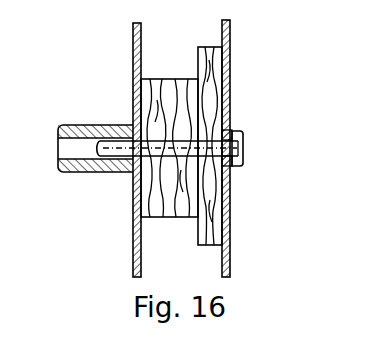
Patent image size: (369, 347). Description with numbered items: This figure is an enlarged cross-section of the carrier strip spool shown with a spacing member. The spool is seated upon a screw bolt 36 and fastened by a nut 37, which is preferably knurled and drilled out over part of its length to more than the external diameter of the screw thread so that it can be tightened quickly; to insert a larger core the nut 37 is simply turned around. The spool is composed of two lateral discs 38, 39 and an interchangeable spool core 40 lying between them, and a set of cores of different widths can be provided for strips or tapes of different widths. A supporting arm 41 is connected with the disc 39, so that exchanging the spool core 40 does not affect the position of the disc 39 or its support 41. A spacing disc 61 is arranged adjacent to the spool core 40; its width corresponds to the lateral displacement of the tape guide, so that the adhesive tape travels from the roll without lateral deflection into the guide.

The screw bolt 36 is at (122, 142).
The nut 37 is at (89, 127).
The lateral disc 38 is at (133, 29).
The lateral disc 39 is at (222, 29).
The spool core 40 is at (184, 213).
The supporting arm 41 is at (237, 168).
The spacing disc 61 is at (209, 246).